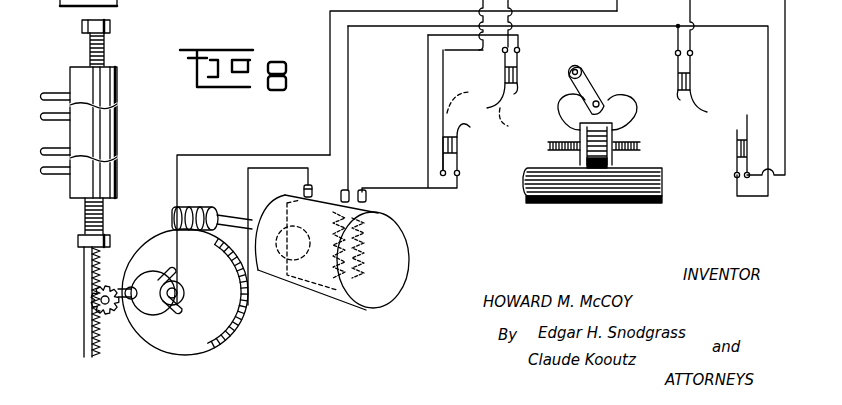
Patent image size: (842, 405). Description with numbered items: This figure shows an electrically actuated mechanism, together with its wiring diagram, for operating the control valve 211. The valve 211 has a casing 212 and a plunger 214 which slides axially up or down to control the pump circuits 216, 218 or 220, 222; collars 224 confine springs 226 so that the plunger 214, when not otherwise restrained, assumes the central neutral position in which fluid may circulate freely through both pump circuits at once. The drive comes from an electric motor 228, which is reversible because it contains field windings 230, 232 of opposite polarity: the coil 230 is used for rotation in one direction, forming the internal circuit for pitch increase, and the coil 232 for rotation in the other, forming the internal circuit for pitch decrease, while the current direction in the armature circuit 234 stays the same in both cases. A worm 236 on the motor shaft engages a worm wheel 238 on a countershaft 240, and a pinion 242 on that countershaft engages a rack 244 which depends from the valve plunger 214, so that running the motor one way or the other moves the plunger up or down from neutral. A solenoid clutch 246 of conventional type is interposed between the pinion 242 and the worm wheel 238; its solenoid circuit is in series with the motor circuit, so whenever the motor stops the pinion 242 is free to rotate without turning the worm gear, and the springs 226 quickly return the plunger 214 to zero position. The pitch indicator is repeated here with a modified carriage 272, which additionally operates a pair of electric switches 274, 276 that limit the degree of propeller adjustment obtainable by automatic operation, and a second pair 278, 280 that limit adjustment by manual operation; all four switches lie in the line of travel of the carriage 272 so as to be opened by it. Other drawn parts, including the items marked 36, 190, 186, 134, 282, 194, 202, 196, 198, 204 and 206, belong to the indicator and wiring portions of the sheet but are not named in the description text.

The support member 36 is at (118, 0).
The frame portion 190 is at (45, 0).
The conductor 186 is at (202, 5).
The conductor 134 is at (292, 5).
The conductor 282 is at (632, 0).
The valve 211 is at (143, 106).
The collars 224 is at (112, 26).
The springs 226 is at (108, 45).
The casing 212 is at (118, 137).
The pump circuit 216 is at (67, 90).
The pump circuit 218 is at (62, 121).
The pump circuit 220 is at (42, 152).
The pump circuit 222 is at (57, 173).
The plunger 214 is at (84, 222).
The rack 244 is at (82, 264).
The pinion 242 is at (90, 297).
The solenoid clutch 246 is at (144, 286).
The countershaft 240 is at (132, 313).
The worm wheel 238 is at (228, 340).
The worm 236 is at (184, 212).
The armature circuit 234 is at (297, 193).
The field winding 230 is at (358, 220).
The field winding 232 is at (365, 252).
The electric motor 228 is at (332, 260).
The electric switch 278 is at (458, 127).
The electric switch 274 is at (512, 93).
The electric switch 276 is at (682, 89).
The electric switch 280 is at (740, 131).
The base 194 is at (578, 198).
The clamp plate 202 is at (630, 101).
The screw 196 is at (551, 154).
The screw 198 is at (620, 163).
The pitch indicator carriage 272 is at (585, 90).
The roller 204 is at (569, 90).
The pivot 206 is at (580, 66).